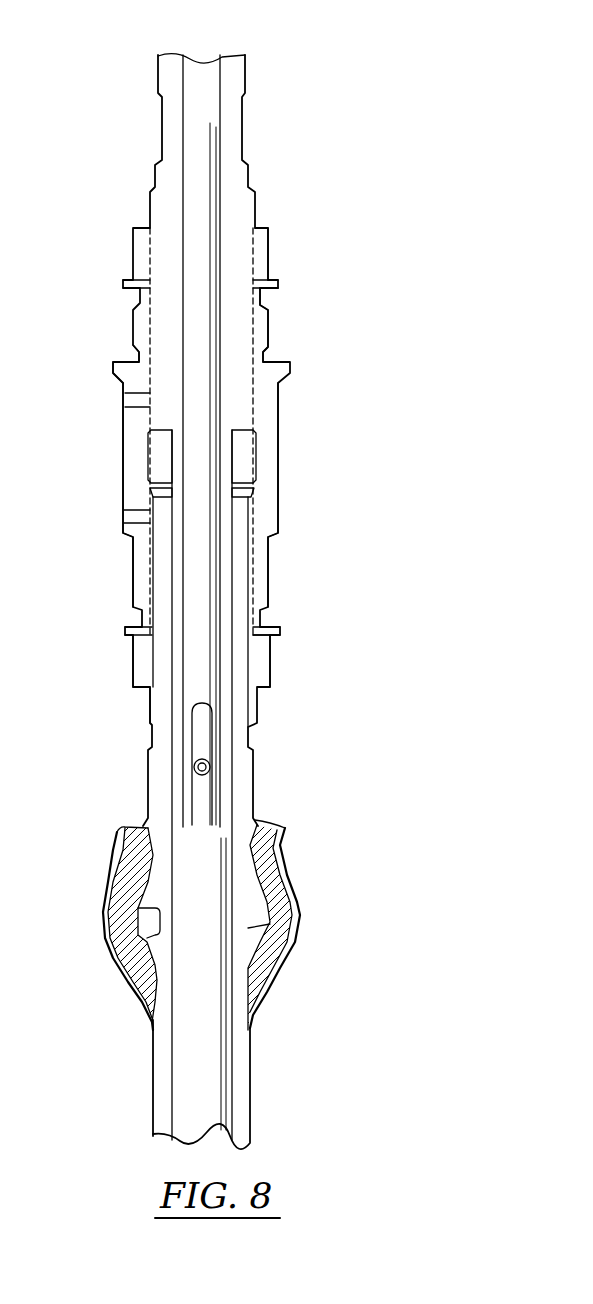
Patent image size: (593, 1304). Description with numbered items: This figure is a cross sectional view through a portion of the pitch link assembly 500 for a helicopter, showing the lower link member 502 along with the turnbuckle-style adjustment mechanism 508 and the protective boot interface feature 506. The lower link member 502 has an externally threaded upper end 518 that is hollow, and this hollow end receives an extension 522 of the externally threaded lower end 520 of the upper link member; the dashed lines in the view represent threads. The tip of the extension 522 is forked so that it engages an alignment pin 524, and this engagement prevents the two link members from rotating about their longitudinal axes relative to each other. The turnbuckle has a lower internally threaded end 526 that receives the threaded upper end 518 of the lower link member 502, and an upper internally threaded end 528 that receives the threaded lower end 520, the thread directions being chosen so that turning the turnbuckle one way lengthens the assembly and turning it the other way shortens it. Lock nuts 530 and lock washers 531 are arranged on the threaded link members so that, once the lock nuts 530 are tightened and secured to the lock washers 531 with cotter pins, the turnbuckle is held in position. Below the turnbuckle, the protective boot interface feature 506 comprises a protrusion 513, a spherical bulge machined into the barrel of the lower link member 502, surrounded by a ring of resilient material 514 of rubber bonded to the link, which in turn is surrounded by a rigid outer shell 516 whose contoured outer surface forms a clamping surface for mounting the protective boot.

The pitch link assembly 500 is at (216, 32).
The lower link member 502 is at (153, 1088).
The protective boot interface feature 506 is at (334, 957).
The adjustment mechanism 508 is at (123, 442).
The protrusion 513 is at (257, 930).
The resilient material 514 is at (125, 930).
The rigid outer shell 516 is at (108, 882).
The upper end of lower link member 518 is at (157, 562).
The lower end of upper link member 520 is at (155, 355).
The extension 522 is at (187, 687).
The alignment pin 524 is at (194, 765).
The lower internally threaded end of turnbuckle 526 is at (262, 573).
The upper internally threaded end of turnbuckle 528 is at (263, 325).
The lock nuts 530 is at (262, 252).
The lock washers 531 is at (123, 282).